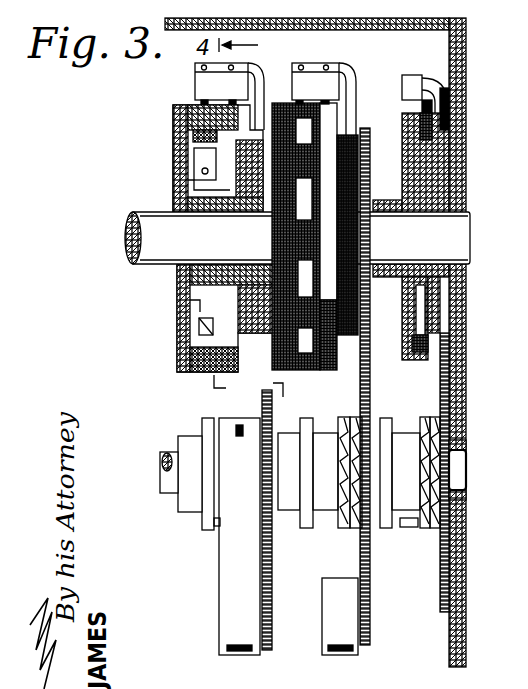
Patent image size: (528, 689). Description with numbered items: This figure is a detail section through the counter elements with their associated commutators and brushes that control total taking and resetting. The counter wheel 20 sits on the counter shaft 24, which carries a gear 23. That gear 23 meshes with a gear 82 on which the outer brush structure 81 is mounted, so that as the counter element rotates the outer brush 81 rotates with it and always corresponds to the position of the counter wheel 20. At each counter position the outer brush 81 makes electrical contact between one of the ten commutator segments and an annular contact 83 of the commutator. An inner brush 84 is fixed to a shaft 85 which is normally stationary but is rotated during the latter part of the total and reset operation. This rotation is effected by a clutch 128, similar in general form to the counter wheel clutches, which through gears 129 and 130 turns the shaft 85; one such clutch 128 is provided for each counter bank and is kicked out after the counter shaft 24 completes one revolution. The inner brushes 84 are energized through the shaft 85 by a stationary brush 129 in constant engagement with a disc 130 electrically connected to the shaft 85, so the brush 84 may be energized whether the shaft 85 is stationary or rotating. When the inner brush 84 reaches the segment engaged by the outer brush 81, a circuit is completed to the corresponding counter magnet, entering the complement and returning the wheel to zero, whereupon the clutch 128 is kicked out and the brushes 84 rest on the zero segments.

The counter wheel 20 is at (327, 643).
The gear 23 is at (368, 608).
The counter shaft 24 is at (456, 466).
The outer brush structure 81 is at (316, 92).
The gear 82 is at (368, 158).
The annular contact 83 is at (327, 128).
The inner brush 84 is at (185, 137).
The shaft 85 is at (443, 236).
The clutch 128 is at (405, 503).
The gear 129 is at (450, 100).
The gear 130 is at (420, 142).